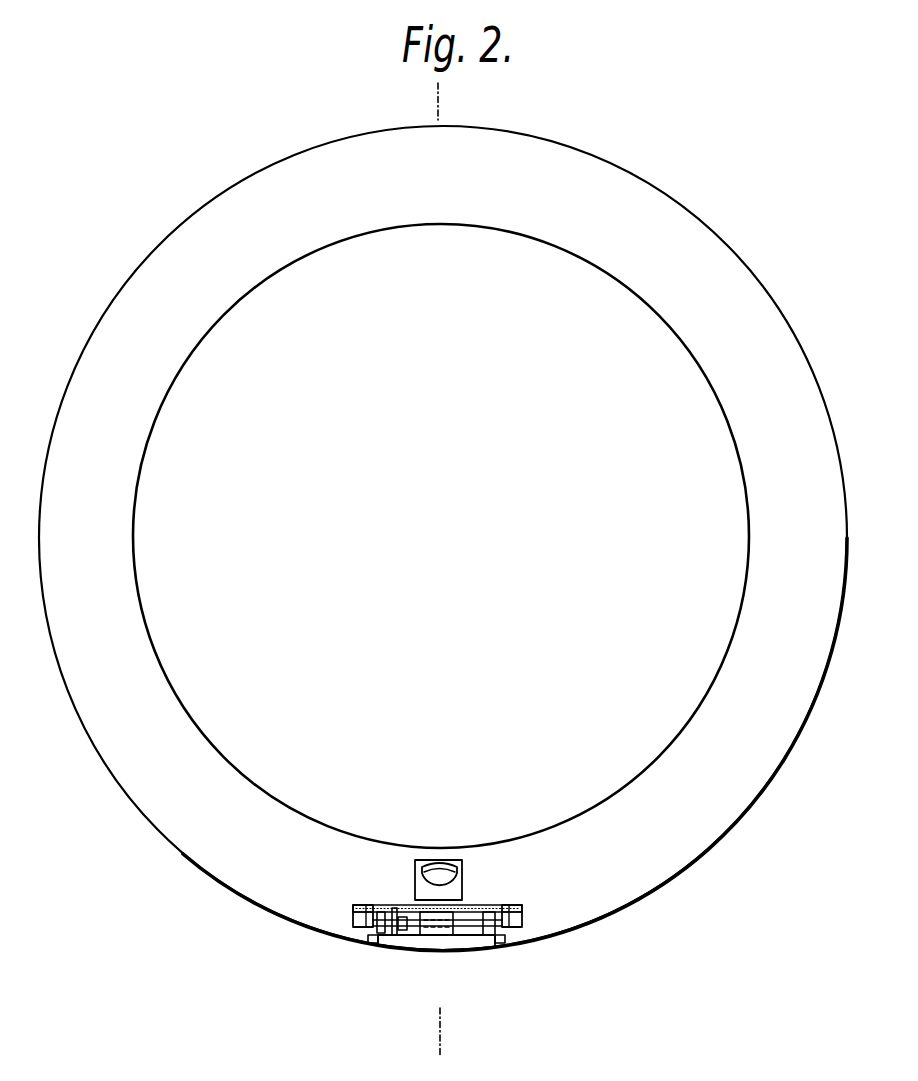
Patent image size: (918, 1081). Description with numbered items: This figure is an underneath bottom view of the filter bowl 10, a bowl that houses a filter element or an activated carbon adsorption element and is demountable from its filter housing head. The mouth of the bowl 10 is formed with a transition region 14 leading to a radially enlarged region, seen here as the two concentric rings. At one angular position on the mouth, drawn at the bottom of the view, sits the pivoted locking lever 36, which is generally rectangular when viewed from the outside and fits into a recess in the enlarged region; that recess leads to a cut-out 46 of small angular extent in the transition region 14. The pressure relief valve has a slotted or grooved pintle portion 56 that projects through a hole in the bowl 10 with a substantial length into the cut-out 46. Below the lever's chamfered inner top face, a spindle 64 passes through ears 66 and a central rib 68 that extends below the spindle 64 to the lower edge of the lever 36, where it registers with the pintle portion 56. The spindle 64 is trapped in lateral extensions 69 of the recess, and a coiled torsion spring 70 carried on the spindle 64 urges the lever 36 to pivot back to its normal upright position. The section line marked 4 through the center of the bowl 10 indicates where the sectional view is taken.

The section line 4- 4 is at (440, 102).
The filter bowl 10 is at (450, 532).
The transition region 14 is at (210, 830).
The locking lever 36 is at (442, 948).
The cut-out 46 is at (458, 887).
The pintle portion 56 is at (437, 880).
The spindle 64 is at (470, 920).
The ears 66 is at (368, 939).
The central rib 68 is at (442, 930).
The lateral extensions 69 is at (362, 905).
The coiled torsion spring 70 is at (398, 935).